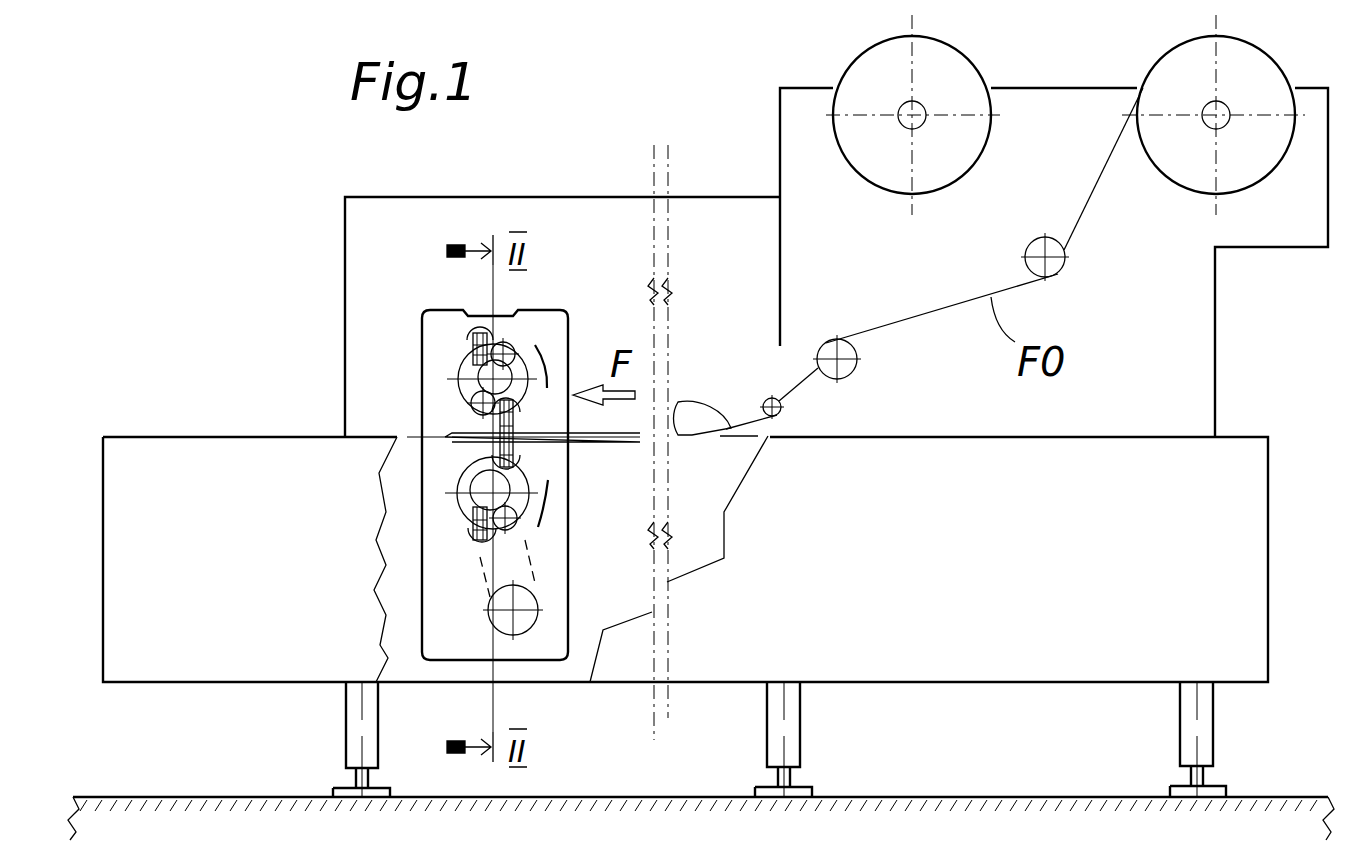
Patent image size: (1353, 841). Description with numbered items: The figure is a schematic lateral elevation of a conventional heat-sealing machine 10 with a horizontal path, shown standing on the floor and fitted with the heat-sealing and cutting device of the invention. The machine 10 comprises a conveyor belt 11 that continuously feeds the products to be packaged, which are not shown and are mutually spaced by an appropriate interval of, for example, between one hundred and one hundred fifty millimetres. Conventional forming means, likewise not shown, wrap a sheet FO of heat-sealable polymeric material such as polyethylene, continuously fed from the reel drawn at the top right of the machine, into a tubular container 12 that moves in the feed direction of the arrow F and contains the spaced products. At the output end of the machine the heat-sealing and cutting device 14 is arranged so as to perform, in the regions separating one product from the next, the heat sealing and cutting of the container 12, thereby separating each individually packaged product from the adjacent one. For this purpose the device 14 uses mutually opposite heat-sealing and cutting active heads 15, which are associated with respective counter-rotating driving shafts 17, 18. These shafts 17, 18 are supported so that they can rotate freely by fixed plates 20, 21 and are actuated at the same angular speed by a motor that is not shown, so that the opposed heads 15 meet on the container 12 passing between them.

The heat-sealing machine 10 is at (243, 283).
The conveyor belt 11 is at (744, 440).
The tubular container 12 is at (629, 440).
The heat-sealing and cutting device 14 is at (403, 413).
The heat-sealing and cutting active heads 15 is at (473, 337).
The driving shaft 17 is at (445, 495).
The driving shaft 18 is at (515, 367).
The fixed plate 20 is at (437, 623).
The fixed plate 21 is at (437, 623).